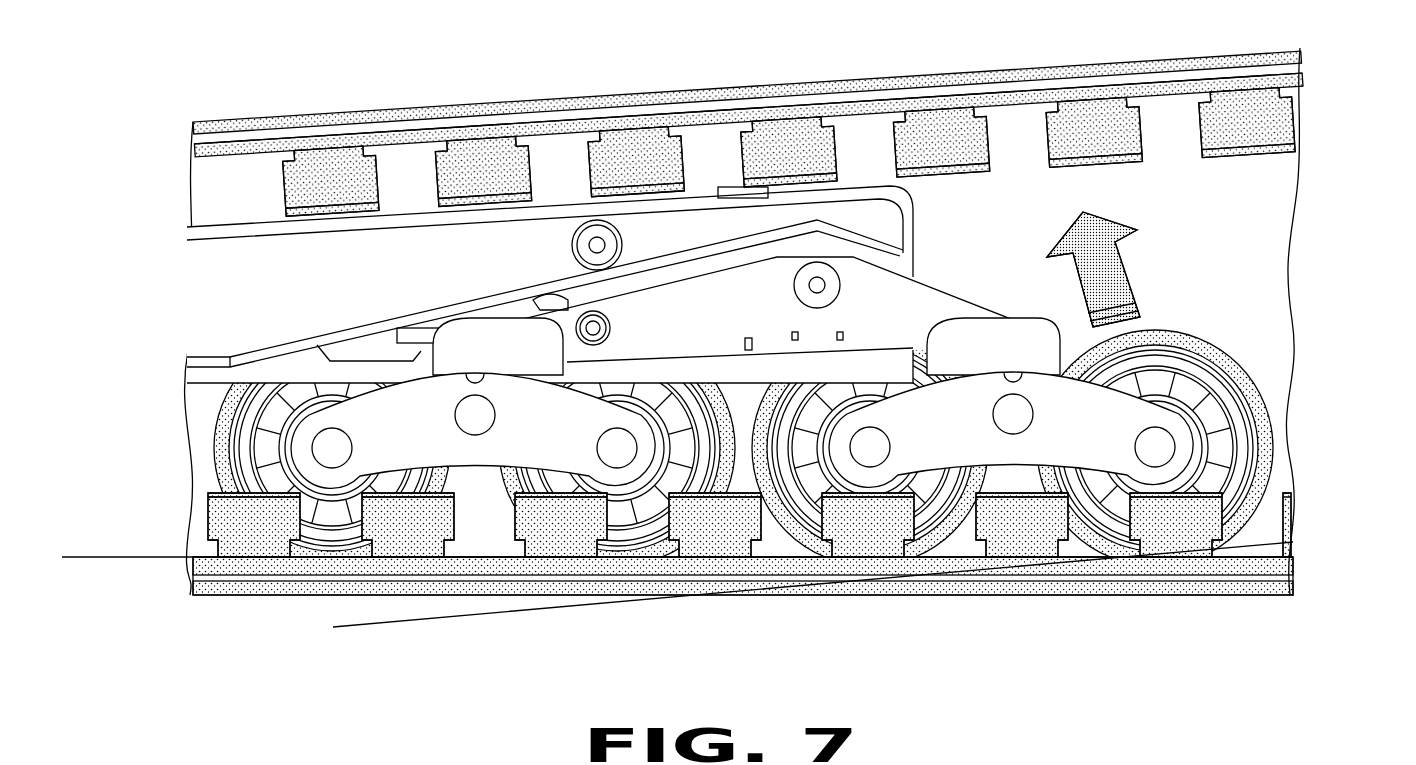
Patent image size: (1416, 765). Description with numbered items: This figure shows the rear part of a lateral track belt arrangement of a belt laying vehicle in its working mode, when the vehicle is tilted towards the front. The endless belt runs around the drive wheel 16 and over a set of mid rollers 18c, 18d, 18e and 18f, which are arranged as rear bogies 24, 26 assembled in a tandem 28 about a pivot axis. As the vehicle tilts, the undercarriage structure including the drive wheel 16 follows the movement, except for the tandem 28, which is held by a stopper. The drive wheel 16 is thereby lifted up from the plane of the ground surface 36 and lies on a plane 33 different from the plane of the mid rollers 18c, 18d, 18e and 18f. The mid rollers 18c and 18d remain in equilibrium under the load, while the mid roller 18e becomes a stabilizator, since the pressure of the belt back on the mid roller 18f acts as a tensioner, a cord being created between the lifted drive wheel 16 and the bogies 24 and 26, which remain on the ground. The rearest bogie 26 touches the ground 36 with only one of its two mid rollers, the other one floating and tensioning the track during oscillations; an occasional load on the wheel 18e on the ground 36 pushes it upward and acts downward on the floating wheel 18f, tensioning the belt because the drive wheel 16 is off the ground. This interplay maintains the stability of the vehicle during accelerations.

The drive wheel 16 is at (1285, 281).
The mid roller 18c is at (223, 421).
The mid roller 18d is at (677, 560).
The mid roller 18e is at (813, 560).
The mid roller 18f is at (1268, 460).
The rear bogie 24 is at (546, 441).
The rear bogie 26 is at (1039, 457).
The tandem 28 is at (962, 295).
The plane 33 is at (360, 628).
The ground surface 36 is at (90, 560).